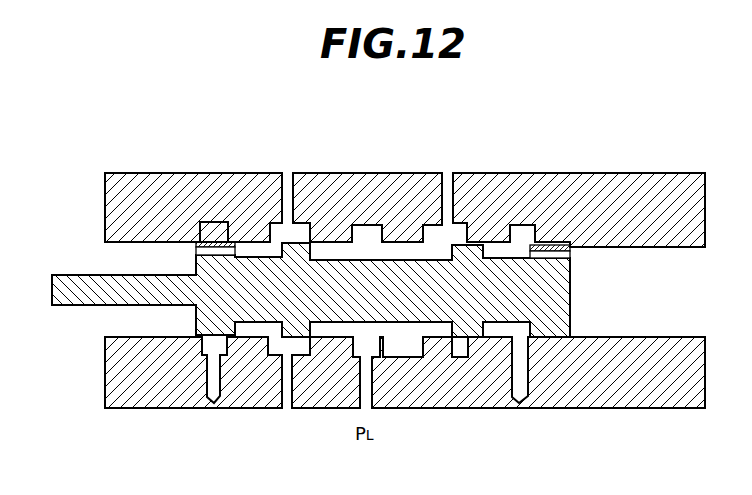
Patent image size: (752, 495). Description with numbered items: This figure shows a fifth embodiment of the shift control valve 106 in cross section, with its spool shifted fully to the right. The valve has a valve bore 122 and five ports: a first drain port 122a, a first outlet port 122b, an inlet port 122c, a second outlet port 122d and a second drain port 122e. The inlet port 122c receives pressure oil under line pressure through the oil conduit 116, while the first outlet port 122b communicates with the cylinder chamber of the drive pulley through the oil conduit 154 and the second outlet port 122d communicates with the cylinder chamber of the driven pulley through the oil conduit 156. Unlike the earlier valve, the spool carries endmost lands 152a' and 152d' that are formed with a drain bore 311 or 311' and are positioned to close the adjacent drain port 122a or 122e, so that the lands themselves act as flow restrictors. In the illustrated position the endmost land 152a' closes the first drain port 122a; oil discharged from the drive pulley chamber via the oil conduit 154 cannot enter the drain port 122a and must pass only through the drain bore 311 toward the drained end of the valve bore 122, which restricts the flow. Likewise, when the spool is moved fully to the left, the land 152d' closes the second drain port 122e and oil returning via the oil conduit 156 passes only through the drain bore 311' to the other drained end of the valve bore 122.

The valve bore 122 is at (167, 243).
The shift control valve 106 is at (528, 172).
The drain bore 311 is at (215, 187).
The drain bore 311' is at (590, 193).
The first drain port 122a is at (218, 228).
The first outlet port 122b is at (277, 236).
The inlet port 122c is at (368, 233).
The second outlet port 122d is at (460, 236).
The second drain port 122e is at (520, 240).
The oil conduit 154 is at (295, 190).
The oil conduit 156 is at (441, 192).
The endmost land 152a' is at (193, 393).
The endmost land 152d' is at (538, 389).
The oil conduit 116 is at (373, 388).